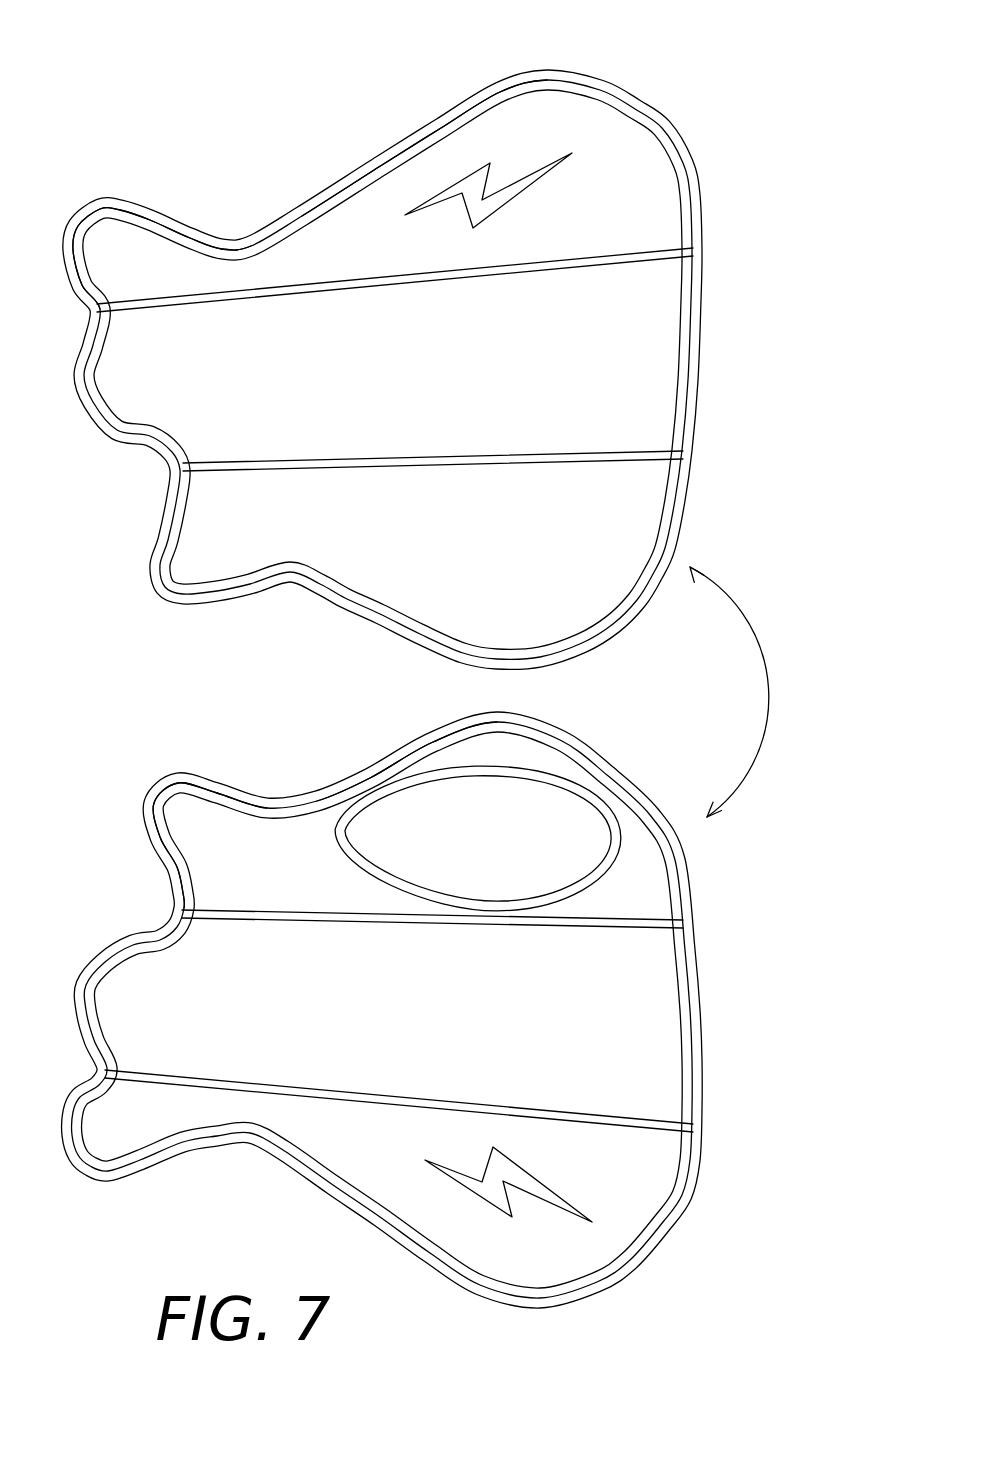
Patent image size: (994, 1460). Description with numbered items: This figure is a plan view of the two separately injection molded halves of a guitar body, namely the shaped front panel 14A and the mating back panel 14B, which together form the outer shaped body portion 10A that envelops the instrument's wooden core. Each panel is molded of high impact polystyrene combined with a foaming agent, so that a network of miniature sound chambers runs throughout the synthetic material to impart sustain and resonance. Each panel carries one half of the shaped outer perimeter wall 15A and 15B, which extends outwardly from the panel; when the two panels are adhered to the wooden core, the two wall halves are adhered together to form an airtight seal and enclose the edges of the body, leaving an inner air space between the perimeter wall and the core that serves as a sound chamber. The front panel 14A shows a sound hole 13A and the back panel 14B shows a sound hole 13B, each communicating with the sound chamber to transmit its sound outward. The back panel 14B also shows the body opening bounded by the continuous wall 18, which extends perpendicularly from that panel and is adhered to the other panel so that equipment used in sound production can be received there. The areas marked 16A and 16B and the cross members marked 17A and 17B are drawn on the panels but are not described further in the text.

The shaped body portion 10A is at (776, 692).
The sound hole 13A is at (513, 173).
The sound hole 13B is at (530, 1195).
The shaped front panel 14A is at (184, 218).
The mating back panel 14B is at (228, 792).
The shaped outer perimeter wall 15A is at (413, 121).
The shaped outer perimeter wall 15B is at (432, 733).
The first panel body 16A is at (628, 173).
The second panel body 16B is at (595, 1242).
The cross members of first panel 17A is at (625, 450).
The cross members of second panel 17B is at (608, 1112).
The continuous wall 18 is at (572, 787).